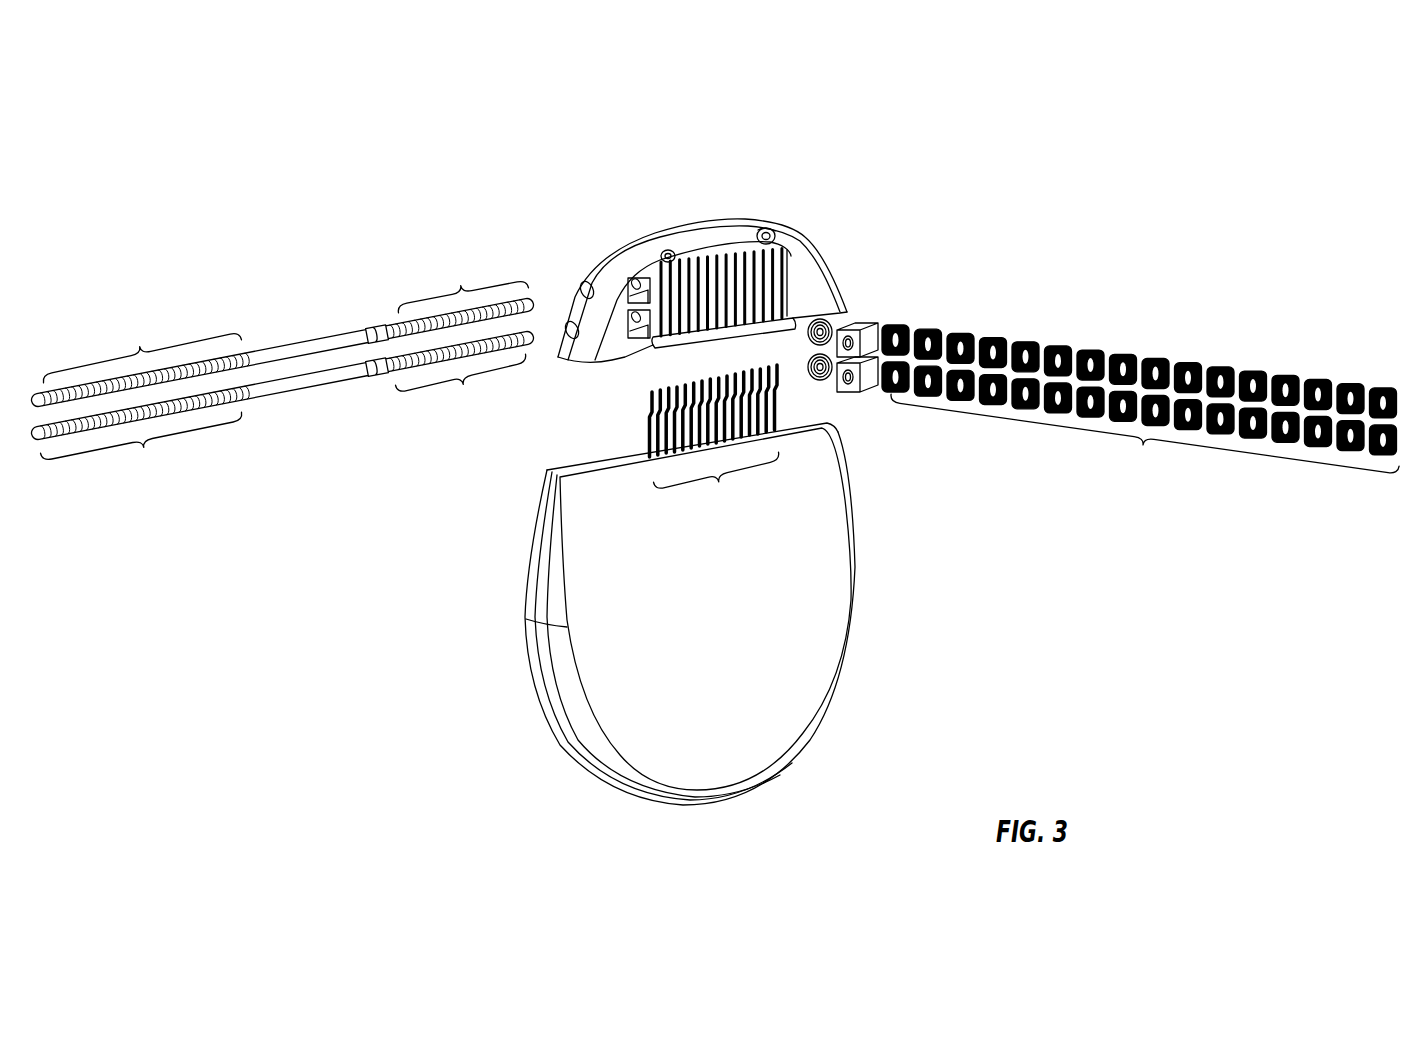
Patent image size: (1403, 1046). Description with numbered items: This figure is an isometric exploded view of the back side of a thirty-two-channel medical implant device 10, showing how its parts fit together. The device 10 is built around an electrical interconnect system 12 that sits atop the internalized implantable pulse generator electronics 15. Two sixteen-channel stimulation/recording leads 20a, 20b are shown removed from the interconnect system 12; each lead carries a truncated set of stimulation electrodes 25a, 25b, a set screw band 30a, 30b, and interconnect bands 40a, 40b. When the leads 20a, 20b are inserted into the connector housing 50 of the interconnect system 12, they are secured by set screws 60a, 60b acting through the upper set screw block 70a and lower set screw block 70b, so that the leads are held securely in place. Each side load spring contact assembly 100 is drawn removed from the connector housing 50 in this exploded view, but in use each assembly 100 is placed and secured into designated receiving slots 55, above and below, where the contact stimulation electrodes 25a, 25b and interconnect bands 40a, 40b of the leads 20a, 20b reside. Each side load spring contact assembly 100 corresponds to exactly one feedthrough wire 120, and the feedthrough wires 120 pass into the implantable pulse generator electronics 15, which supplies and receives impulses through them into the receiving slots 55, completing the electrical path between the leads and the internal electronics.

The medical implant device 10 is at (676, 199).
The electrical interconnect system 12 is at (710, 232).
The implantable pulse generator electronics 15 is at (731, 613).
The upper stimulation/recording lead 20a is at (266, 338).
The lower stimulation/recording lead 20b is at (267, 404).
The stimulation electrodes 25a is at (142, 348).
The stimulation electrodes 25b is at (141, 447).
The set screw band 30a is at (375, 322).
The set screw band 30b is at (378, 385).
The interconnect band 40a is at (463, 283).
The interconnect band 40b is at (461, 388).
The connector housing 50 is at (834, 256).
The receiving slots 55 is at (724, 346).
The set screw 60a is at (831, 322).
The set screw 60b is at (832, 381).
The upper set screw block 70a is at (640, 280).
The lower set screw block 70b is at (645, 328).
The side load spring contact assembly 100 is at (1140, 404).
The feedthrough wire 120 is at (714, 441).